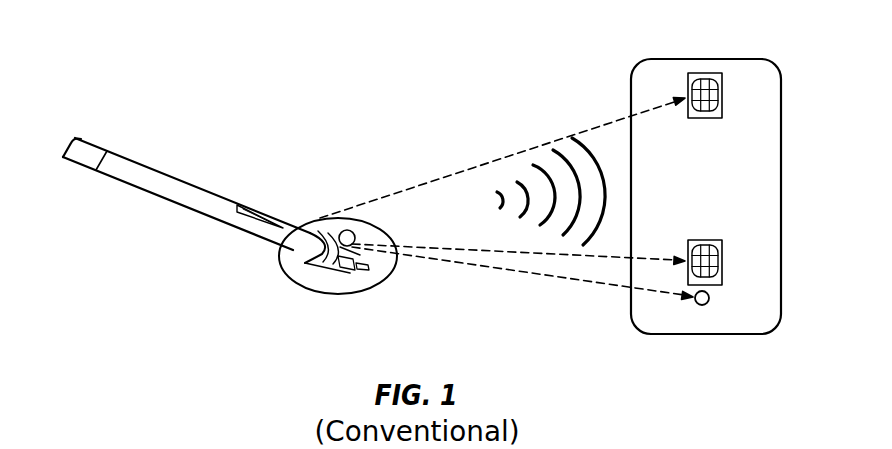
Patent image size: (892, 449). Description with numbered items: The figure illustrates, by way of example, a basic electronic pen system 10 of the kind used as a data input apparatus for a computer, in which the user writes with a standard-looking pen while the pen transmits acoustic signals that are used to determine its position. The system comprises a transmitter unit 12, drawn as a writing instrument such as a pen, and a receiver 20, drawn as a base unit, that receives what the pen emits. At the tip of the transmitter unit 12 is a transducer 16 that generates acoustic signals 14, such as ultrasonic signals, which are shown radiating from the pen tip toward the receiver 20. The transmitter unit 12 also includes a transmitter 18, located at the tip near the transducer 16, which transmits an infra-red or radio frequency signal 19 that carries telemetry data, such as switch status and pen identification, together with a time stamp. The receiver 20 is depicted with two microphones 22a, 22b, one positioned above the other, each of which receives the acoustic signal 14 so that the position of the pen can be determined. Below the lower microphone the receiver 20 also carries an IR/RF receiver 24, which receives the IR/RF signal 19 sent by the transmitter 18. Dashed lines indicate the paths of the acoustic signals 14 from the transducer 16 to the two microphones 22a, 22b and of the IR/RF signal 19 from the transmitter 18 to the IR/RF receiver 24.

The electronic pen system 10 is at (148, 92).
The transmitter unit 12 is at (183, 207).
The acoustic signals 14 is at (525, 193).
The transducer 16 is at (330, 240).
The transmitter 18 is at (373, 267).
The IR/RF signal 19 is at (532, 272).
The receiver 20 is at (630, 72).
The microphone 22a is at (723, 85).
The microphone 22b is at (724, 260).
The IR/RF receiver 24 is at (707, 305).